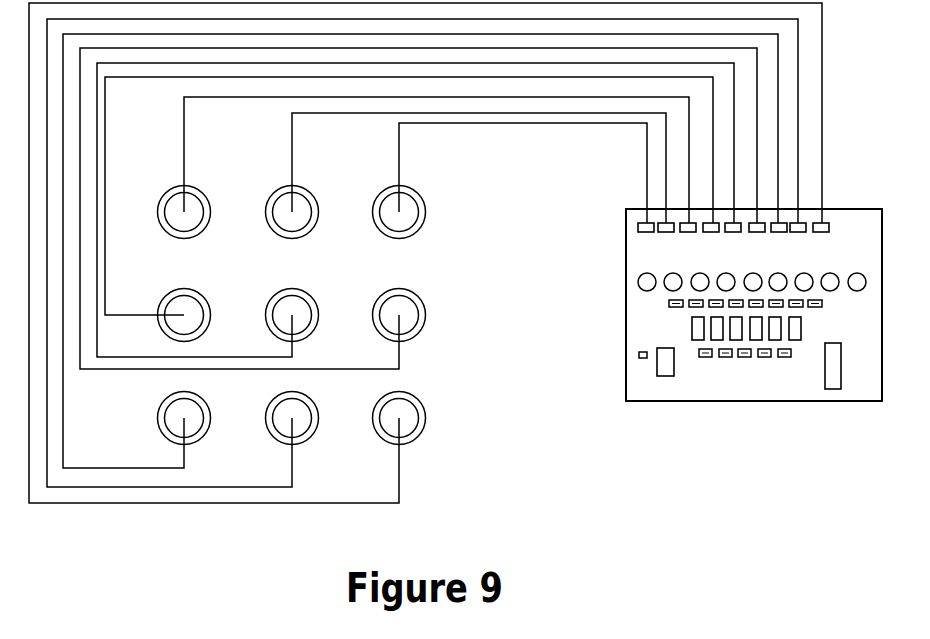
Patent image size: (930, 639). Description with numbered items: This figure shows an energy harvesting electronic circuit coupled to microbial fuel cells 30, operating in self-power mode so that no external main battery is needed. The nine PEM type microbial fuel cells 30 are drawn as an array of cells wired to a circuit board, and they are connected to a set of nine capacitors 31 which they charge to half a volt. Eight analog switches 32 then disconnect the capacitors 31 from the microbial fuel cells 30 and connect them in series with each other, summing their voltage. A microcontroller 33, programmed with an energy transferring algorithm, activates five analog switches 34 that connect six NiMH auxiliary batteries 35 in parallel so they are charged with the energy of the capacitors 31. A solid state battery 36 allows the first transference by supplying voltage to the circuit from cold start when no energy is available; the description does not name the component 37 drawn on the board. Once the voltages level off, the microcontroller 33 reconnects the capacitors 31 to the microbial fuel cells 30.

The microbial fuel cells 30 is at (292, 315).
The capacitors set 31 is at (752, 274).
The analog switches 32 is at (756, 303).
The microcontroller 33 is at (845, 366).
The analog switches 34 is at (745, 363).
The auxiliary batteries 35 is at (757, 328).
The solid state battery 36 is at (642, 345).
The voltage regulator 37 is at (666, 372).